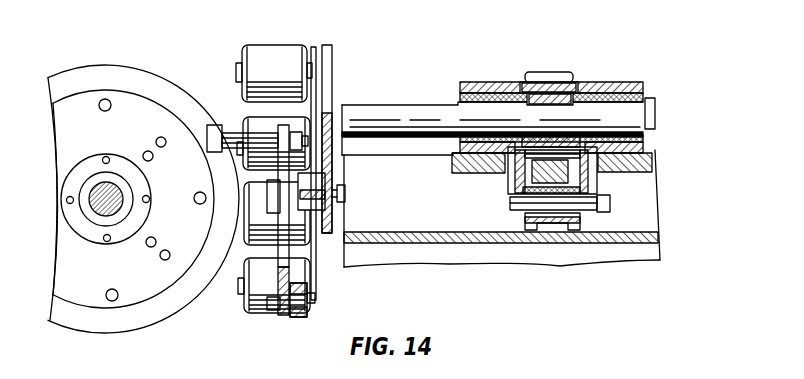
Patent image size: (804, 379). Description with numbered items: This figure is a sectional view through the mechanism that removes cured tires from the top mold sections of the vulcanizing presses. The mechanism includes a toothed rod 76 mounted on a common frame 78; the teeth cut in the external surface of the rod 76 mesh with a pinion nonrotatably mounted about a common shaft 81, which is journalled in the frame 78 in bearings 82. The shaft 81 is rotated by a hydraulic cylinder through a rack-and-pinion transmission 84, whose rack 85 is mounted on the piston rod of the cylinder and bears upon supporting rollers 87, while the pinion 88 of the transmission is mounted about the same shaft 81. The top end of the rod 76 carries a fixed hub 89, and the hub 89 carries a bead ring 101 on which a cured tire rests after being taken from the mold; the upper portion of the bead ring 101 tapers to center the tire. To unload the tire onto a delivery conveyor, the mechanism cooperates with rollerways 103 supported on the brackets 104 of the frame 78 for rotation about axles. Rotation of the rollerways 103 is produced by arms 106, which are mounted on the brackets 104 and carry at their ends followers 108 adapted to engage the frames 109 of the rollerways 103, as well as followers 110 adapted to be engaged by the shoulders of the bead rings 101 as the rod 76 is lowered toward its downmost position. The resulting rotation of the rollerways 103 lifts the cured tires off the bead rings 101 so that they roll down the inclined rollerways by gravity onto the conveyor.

The rod 76 is at (118, 197).
The frame 78 is at (476, 246).
The shaft 81 is at (470, 108).
The bearings 82 is at (590, 85).
The rack-and-pinion transmission 84 is at (518, 174).
The rack 85 is at (597, 176).
The supporting rollers 87 is at (550, 228).
The pinion 88 is at (540, 73).
The hub 89 is at (143, 288).
The bead ring 101 is at (190, 297).
The rollerways 103 is at (270, 55).
The brackets 104 is at (333, 118).
The arms 106 is at (285, 248).
The followers 108 is at (300, 320).
The frames 109 is at (313, 47).
The followers 110 is at (214, 126).